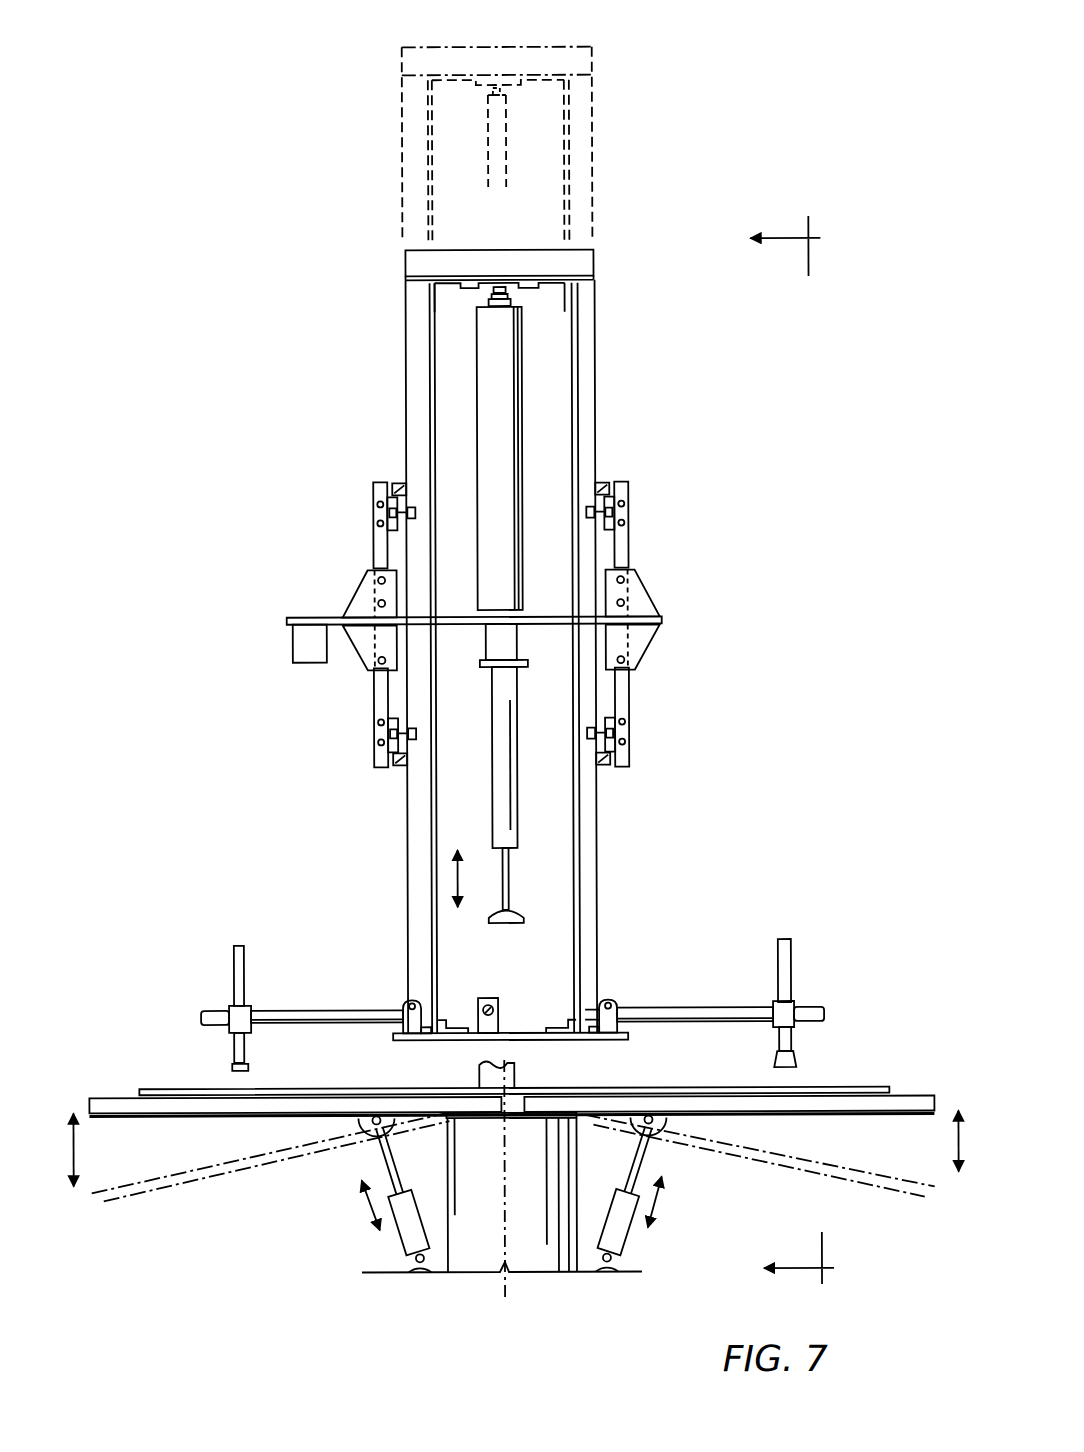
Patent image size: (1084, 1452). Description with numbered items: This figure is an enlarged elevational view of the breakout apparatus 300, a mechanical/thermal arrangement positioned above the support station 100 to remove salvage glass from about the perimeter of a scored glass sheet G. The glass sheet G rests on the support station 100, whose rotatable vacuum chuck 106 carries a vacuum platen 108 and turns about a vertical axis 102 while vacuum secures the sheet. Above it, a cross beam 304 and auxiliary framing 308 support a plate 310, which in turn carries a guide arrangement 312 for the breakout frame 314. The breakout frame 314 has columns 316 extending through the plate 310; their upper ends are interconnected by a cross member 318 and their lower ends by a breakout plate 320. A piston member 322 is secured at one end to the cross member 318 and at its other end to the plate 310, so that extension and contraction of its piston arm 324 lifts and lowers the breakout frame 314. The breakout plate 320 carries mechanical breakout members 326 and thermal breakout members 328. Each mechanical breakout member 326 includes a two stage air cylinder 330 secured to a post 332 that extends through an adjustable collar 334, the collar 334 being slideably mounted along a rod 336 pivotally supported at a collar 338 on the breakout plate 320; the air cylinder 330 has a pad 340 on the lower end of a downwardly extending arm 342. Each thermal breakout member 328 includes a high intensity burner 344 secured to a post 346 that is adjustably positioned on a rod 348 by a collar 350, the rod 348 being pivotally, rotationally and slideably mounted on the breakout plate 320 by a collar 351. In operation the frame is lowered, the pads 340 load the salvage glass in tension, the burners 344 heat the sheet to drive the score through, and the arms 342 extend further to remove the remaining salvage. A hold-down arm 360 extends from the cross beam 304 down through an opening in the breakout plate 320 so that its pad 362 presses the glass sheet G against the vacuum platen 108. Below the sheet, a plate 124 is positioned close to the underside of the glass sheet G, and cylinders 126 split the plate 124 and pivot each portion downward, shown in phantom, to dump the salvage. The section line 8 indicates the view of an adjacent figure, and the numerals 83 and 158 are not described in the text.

The breakout apparatus 300 is at (365, 195).
The cross member 318 is at (549, 249).
The breakout frame 314 is at (407, 290).
The columns 316 is at (597, 308).
The piston arm 324 is at (510, 296).
The piston member 322 is at (522, 375).
The connecting tabs 83 is at (417, 497).
The guide arrangement 312 is at (374, 547).
The plate 310 is at (600, 616).
The auxiliary framing 308 is at (310, 663).
The cross beam 304 is at (485, 650).
The actuator rod 158 is at (518, 780).
The arm 360 is at (508, 866).
The pad 362 is at (505, 924).
The breakout plate 320 is at (448, 1040).
The mechanical breakout member 326 is at (282, 992).
The post 332 is at (243, 957).
The adjustable collar 334 is at (250, 1010).
The rod 336 is at (352, 1008).
The two stage air cylinder 330 is at (232, 1034).
The arm 342 is at (248, 1060).
The pad 340 is at (248, 1068).
The collar 338 is at (405, 1000).
The thermal breakout member 328 is at (734, 992).
The post 346 is at (777, 960).
The collar 350 is at (775, 1003).
The rod 348 is at (658, 1008).
The high intensity burner 344 is at (794, 1034).
The collar 351 is at (612, 1000).
The glass sheet G is at (392, 1088).
The plate 124 is at (117, 1097).
The support station 100 is at (518, 1200).
The vacuum platen 108 is at (515, 1116).
The vacuum chuck 106 is at (445, 1190).
The cylinders 126 is at (400, 1243).
The vertical axis 102 is at (504, 1281).
The section line 8- 8 is at (800, 750).